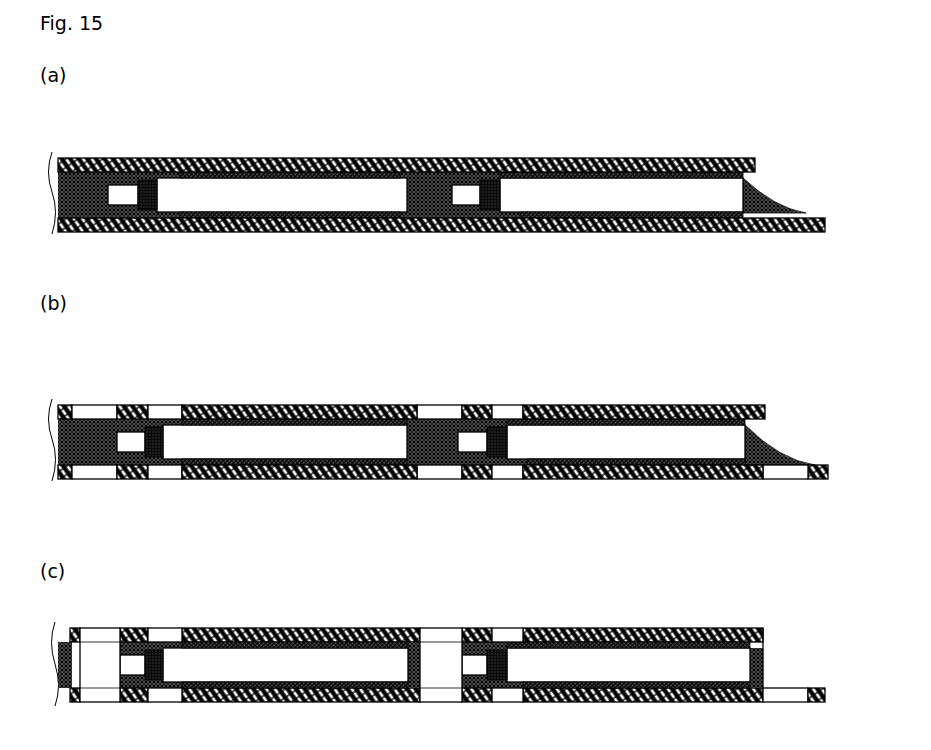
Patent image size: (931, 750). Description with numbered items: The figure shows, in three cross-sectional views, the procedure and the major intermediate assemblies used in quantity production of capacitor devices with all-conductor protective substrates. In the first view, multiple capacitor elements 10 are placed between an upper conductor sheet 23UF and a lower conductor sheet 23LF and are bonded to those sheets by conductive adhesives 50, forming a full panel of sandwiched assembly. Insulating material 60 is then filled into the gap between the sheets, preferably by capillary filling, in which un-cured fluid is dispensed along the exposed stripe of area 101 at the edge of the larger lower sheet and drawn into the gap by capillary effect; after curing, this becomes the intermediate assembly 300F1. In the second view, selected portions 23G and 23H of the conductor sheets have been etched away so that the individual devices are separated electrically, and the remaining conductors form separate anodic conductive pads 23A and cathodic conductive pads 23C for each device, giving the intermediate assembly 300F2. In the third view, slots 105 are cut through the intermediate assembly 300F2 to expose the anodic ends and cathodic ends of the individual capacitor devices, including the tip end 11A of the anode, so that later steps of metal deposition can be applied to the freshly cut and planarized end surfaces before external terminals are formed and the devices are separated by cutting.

The intermediate assembly 300F1 is at (128, 106).
The intermediate assembly 300F2 is at (120, 336).
The upper conductor sheet 23UF is at (208, 158).
The lower conductor sheet 23LF is at (275, 232).
The capacitor element 10 is at (330, 195).
The stripe of area 101 is at (790, 198).
The insulating material 60 is at (432, 200).
The conductive adhesive 50 is at (673, 228).
The selected portion of conductor sheet 23H is at (95, 409).
The anodic conductive pad 23A is at (127, 405).
The selected portion of conductor sheet 23G is at (167, 408).
The cathodic conductive pad 23C is at (287, 400).
The slot 105 is at (100, 655).
The tip end 11A is at (120, 672).